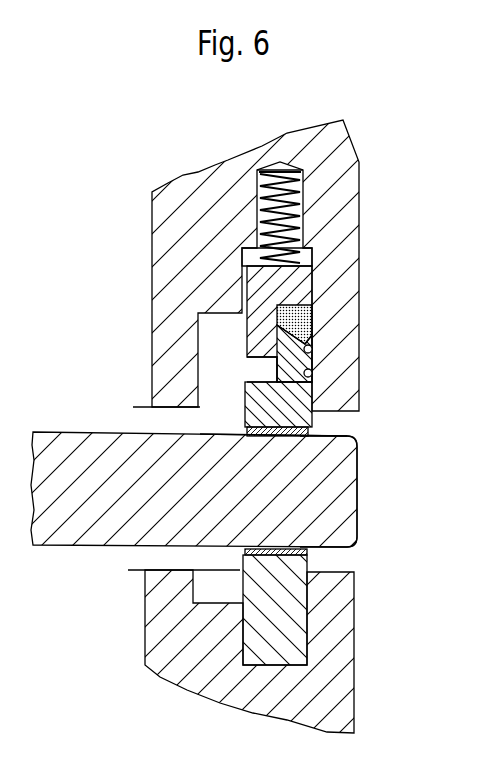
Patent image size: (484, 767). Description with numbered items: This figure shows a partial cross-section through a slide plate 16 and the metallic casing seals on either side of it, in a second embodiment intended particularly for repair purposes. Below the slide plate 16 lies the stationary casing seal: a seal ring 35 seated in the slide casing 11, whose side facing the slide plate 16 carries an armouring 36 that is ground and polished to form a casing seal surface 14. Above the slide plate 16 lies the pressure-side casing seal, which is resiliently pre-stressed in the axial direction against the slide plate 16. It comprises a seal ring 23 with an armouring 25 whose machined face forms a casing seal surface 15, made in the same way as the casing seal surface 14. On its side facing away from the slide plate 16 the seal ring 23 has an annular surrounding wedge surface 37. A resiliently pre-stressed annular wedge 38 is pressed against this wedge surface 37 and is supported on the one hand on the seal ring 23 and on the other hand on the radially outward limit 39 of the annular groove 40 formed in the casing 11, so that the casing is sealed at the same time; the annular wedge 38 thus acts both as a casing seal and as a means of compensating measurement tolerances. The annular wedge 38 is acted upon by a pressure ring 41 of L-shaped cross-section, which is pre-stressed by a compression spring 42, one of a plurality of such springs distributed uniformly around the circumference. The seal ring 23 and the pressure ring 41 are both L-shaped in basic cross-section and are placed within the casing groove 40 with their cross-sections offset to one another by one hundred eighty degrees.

The slide casing 11 is at (350, 198).
The casing seal surface 14 is at (317, 533).
The casing seal surface 15 is at (253, 438).
The slide plate 16 is at (88, 448).
The seal ring 23 is at (302, 398).
The armouring 25 is at (305, 442).
The seal ring 35 is at (300, 623).
The armouring 36 is at (298, 552).
The wedge surface 37 is at (302, 353).
The annular wedge 38 is at (308, 320).
The radially outward limit 39 is at (312, 373).
The annular groove 40 is at (255, 370).
The pressure ring 41 is at (302, 283).
The compression spring 42 is at (259, 189).